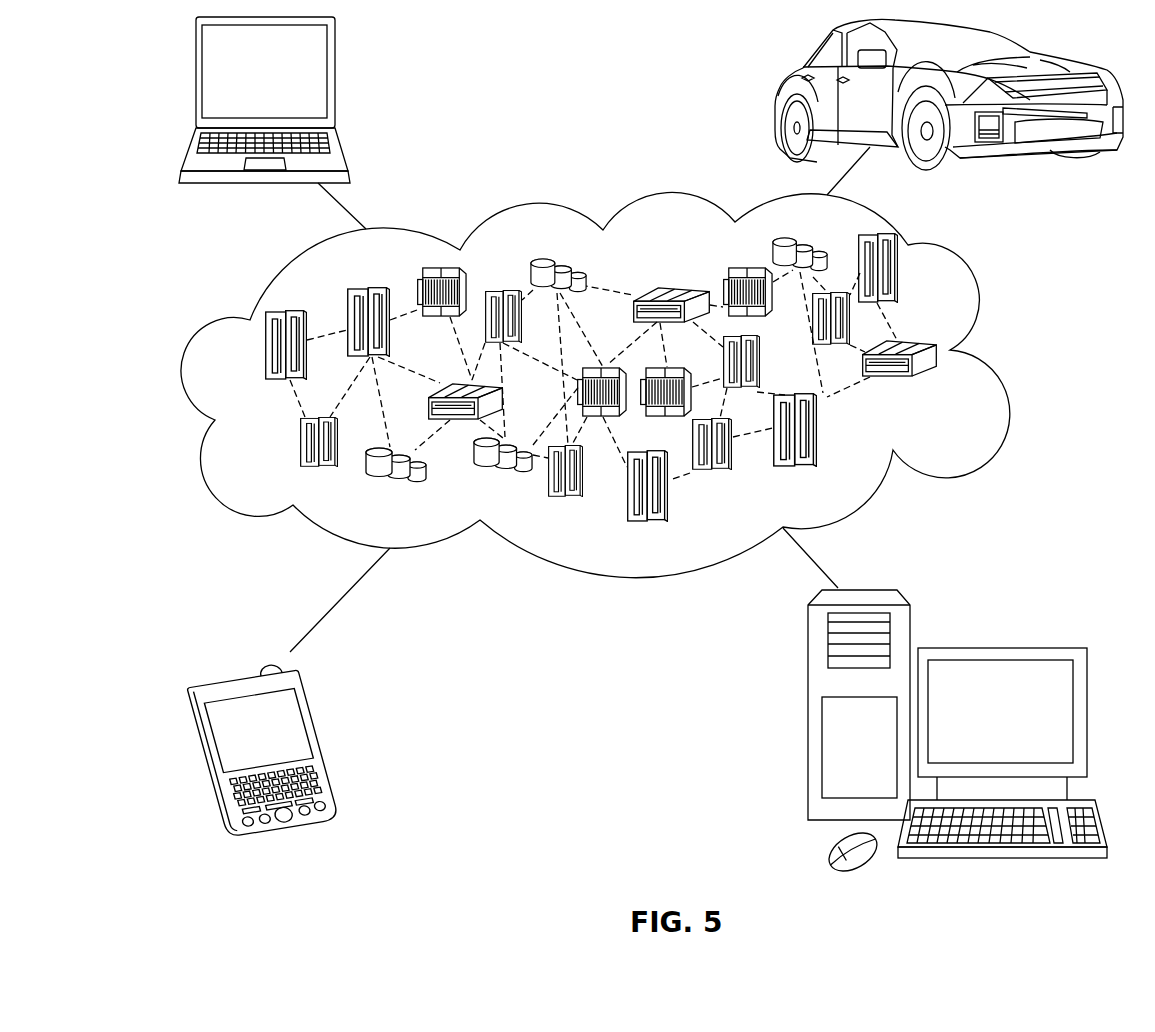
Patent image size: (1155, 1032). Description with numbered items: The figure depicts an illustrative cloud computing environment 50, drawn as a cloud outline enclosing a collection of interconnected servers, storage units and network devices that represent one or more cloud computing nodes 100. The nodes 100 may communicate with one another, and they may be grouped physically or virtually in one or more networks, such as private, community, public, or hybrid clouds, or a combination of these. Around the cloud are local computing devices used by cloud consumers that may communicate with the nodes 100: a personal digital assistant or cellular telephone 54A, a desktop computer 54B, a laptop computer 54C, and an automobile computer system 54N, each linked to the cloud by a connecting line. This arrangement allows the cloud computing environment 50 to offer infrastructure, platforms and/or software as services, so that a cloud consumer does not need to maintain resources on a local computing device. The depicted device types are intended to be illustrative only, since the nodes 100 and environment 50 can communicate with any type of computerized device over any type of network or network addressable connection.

The cloud computing environment 50 is at (1000, 355).
The cloud computing nodes 100 is at (950, 387).
The personal digital assistant or cellular telephone 54A is at (325, 742).
The desktop computer 54B is at (998, 648).
The laptop computer 54C is at (335, 80).
The automobile computer system 54N is at (777, 96).